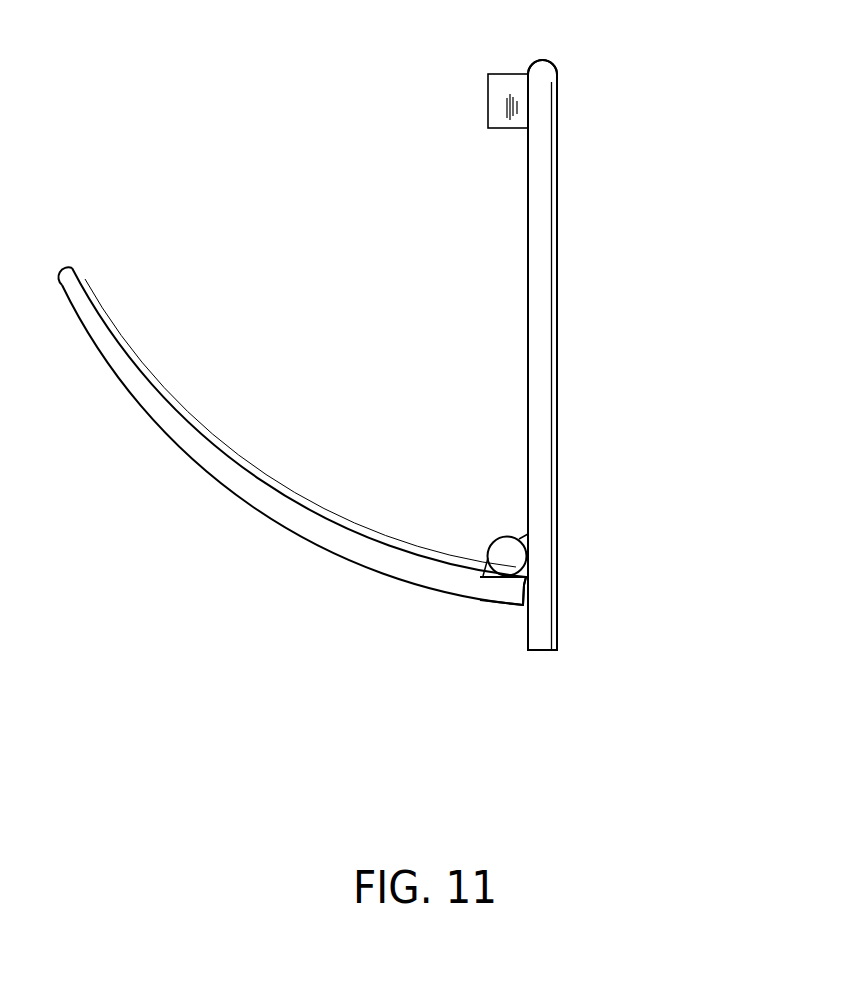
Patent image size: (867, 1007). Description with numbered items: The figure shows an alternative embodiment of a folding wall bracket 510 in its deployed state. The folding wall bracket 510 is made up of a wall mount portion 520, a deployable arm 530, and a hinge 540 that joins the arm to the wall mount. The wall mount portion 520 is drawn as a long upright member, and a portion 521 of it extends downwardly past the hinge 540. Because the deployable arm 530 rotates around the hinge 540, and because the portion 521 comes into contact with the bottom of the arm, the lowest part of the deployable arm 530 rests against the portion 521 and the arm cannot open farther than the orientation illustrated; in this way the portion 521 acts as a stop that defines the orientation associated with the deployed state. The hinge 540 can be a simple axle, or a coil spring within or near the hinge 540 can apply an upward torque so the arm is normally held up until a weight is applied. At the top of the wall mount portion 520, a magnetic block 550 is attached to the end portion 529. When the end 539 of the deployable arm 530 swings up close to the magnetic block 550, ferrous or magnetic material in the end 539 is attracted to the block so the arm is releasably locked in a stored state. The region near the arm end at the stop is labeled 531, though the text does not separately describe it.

The folding wall bracket 510 is at (557, 97).
The wall mount portion 520 is at (558, 378).
The portion of wall mount portion 521 is at (543, 635).
The end portion 529 is at (542, 75).
The deployable arm 530 is at (297, 535).
The arm end 531 is at (520, 595).
The end of deployable arm 539 is at (73, 273).
The hinge 540 is at (510, 552).
The magnetic block 550 is at (487, 82).